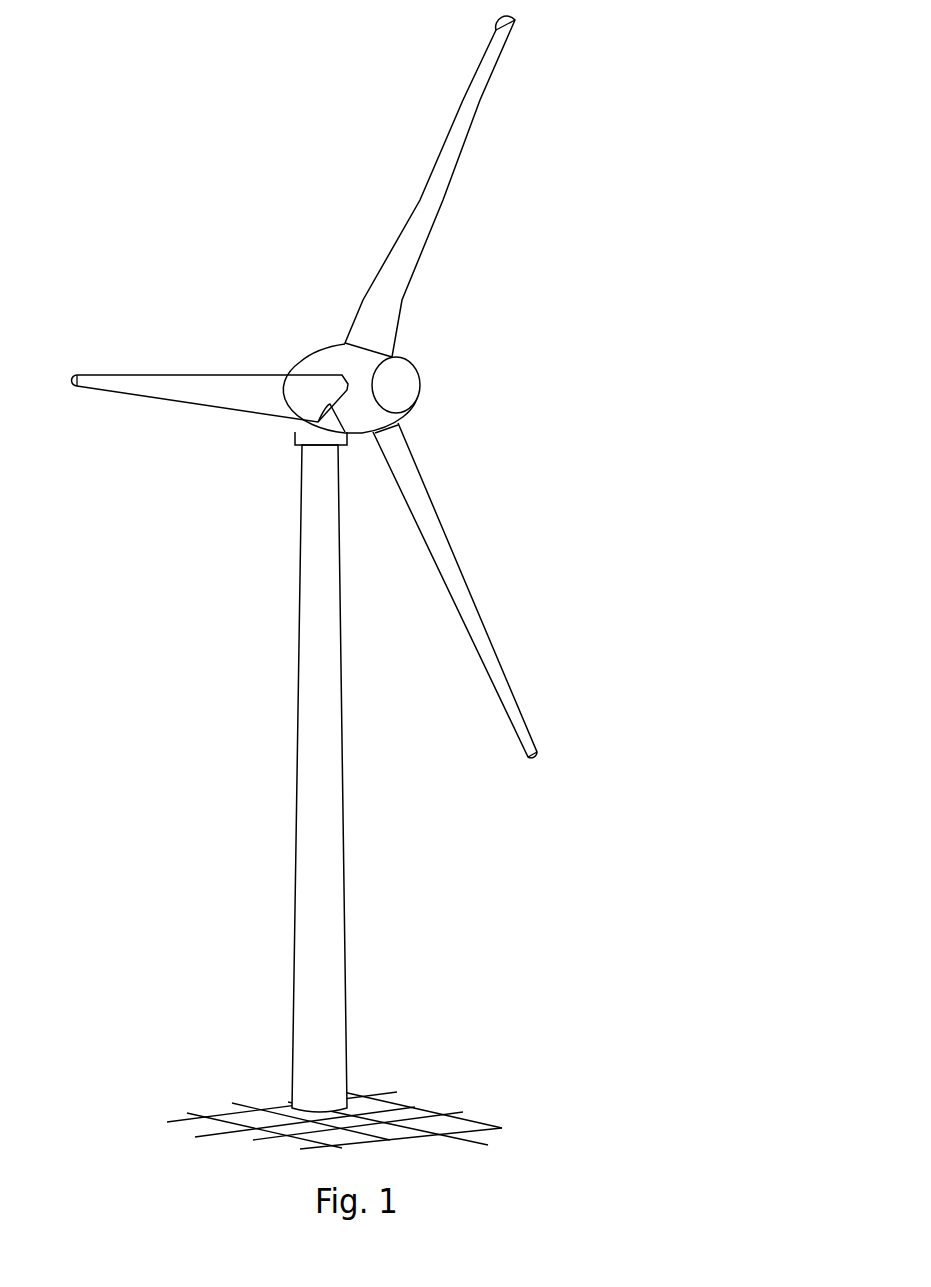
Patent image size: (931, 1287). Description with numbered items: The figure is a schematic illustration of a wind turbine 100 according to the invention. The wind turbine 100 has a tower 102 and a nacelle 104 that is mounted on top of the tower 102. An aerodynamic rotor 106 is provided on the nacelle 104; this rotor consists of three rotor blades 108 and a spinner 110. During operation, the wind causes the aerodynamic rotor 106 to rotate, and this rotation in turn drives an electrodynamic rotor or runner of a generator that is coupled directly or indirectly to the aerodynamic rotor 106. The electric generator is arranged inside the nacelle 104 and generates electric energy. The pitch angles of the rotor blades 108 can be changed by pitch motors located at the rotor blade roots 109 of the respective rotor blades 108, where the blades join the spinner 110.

The wind turbine 100 is at (257, 513).
The tower 102 is at (332, 853).
The nacelle 104 is at (317, 363).
The aerodynamic rotor 106 is at (483, 310).
The rotor blades 108 is at (457, 147).
The rotor blade roots 109 is at (375, 432).
The spinner 110 is at (400, 383).